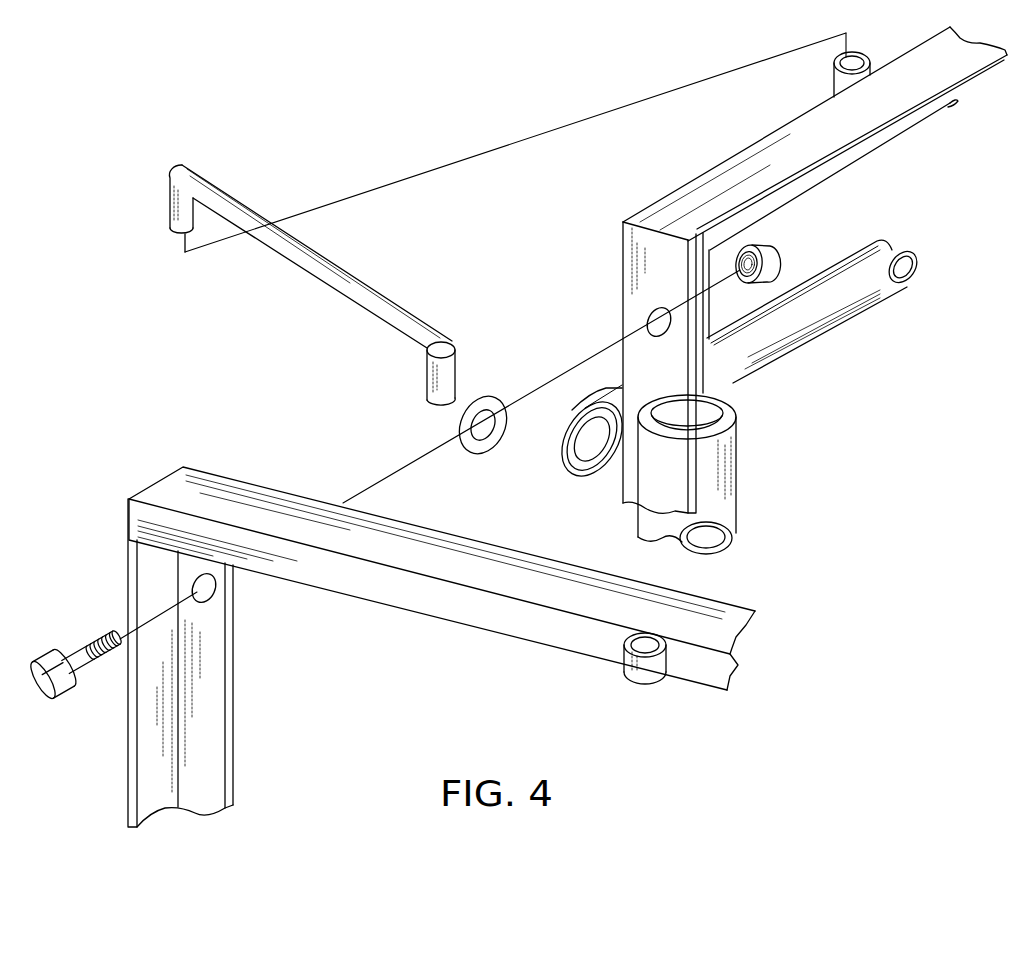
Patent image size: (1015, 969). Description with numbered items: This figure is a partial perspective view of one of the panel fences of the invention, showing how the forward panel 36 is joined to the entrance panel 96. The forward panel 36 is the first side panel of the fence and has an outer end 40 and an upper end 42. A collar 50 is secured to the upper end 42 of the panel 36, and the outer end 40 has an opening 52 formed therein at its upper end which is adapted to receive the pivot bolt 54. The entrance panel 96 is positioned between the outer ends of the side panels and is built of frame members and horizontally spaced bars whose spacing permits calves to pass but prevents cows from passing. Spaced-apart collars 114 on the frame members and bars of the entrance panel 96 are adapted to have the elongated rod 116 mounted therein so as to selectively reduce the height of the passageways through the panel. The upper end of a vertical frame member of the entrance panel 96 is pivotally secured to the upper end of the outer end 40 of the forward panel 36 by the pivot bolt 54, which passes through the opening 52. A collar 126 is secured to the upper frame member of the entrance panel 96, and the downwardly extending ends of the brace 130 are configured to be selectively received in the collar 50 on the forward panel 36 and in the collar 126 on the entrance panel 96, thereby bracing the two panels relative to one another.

The forward panel 36 is at (528, 653).
The outer end 40 is at (205, 740).
The upper end 42 is at (692, 618).
The collar 50 is at (636, 662).
The opening 52 is at (215, 588).
The pivot bolt 54 is at (72, 660).
The entrance panel 96 is at (777, 290).
The collars 114 is at (605, 418).
The elongated rod 116 is at (850, 302).
The collar 126 is at (832, 80).
The brace 130 is at (373, 297).